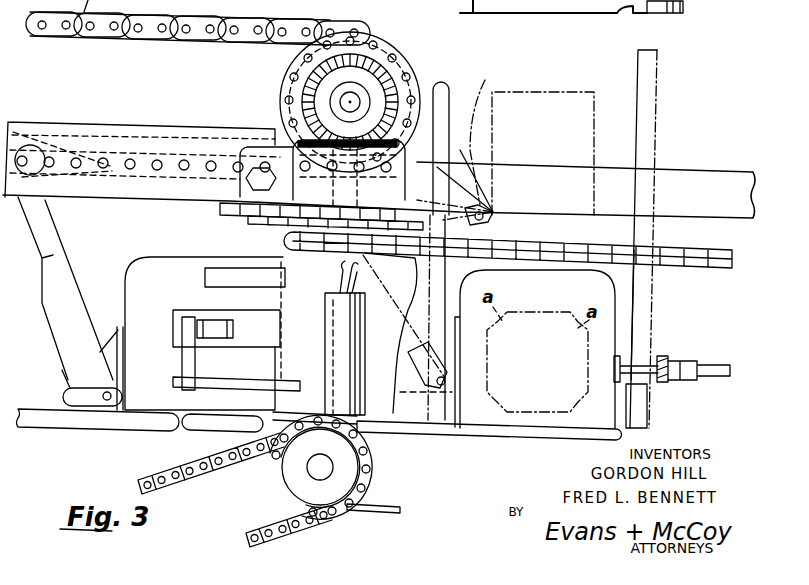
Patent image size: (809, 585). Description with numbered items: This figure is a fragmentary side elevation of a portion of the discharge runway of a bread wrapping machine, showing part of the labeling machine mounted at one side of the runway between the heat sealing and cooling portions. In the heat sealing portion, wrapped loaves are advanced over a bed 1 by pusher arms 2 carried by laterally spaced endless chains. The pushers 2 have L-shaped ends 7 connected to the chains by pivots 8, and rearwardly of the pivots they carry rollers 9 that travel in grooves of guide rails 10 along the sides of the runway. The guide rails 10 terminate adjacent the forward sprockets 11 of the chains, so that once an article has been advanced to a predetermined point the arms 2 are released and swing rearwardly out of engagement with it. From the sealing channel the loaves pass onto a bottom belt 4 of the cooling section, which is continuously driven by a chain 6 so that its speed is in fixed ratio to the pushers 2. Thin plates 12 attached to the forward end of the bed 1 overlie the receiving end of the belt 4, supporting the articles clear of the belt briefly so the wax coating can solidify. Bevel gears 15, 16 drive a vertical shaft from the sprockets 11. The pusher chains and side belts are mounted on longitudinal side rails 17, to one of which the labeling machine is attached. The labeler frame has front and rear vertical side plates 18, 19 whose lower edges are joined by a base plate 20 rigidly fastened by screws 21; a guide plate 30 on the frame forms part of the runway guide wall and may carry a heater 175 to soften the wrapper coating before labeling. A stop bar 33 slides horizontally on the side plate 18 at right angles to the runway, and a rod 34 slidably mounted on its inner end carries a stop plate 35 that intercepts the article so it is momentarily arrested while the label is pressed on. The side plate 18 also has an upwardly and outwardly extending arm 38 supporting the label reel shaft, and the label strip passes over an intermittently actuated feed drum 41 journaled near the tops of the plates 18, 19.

The bed 1 is at (84, 428).
The pusher arms 2 is at (72, 277).
The bottom belt 4 is at (425, 432).
The chain 6 is at (252, 453).
The L-shaped ends 7 is at (52, 182).
The pivots 8 is at (114, 152).
The rollers 9 is at (40, 136).
The guide rails 10 is at (172, 137).
The forward sprockets 11 is at (283, 80).
The thin plates 12 is at (383, 428).
The bevel gear 15 is at (398, 50).
The bevel gear 16 is at (424, 88).
The longitudinal side rails 17 is at (692, 165).
The front vertical side plate 18 is at (652, 318).
The rear vertical side plate 19 is at (459, 144).
The base plate 20 is at (674, 12).
The screws 21 is at (478, 6).
The guide plate 30 is at (280, 260).
The stop bar 33 is at (668, 358).
The rod 34 is at (706, 380).
The stop plate 35 is at (628, 388).
The arm 38 is at (662, 57).
The feed drum 41 is at (540, 92).
The heater 175 is at (323, 348).